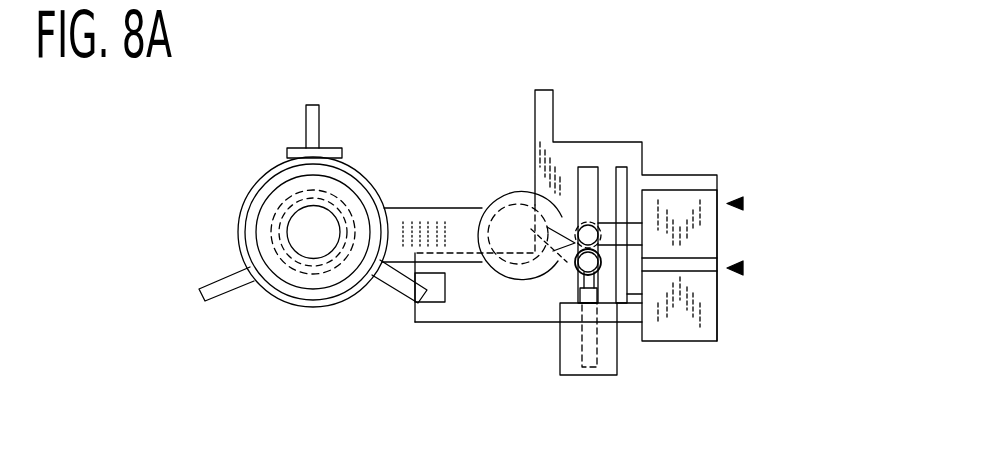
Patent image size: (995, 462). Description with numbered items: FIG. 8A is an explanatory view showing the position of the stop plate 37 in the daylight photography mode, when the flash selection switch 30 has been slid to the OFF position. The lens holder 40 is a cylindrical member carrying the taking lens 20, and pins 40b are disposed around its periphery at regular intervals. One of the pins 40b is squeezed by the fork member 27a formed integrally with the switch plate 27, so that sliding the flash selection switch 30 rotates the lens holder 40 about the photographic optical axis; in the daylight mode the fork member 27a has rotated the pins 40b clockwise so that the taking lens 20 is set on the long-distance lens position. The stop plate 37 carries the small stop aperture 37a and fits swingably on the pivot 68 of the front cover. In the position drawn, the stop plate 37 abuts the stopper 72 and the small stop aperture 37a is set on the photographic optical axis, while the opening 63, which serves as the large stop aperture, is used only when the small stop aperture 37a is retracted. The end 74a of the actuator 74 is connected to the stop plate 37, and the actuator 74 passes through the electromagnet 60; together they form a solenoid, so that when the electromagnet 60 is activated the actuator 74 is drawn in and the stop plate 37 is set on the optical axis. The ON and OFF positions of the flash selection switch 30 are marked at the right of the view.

The taking lens 20 is at (283, 283).
The switch plate 27 is at (597, 142).
The fork member 27a is at (430, 265).
The flash selection switch 30 is at (683, 168).
The stop plate 37 is at (395, 207).
The small stop aperture 37a is at (317, 205).
The lens holder 40 is at (250, 200).
The pins 40b is at (403, 292).
The electromagnet 60 is at (560, 376).
The opening 63 is at (273, 235).
The pivot 68 is at (518, 235).
The stopper 72 is at (340, 152).
The actuator 74 is at (600, 293).
The end of actuator 74a is at (580, 272).